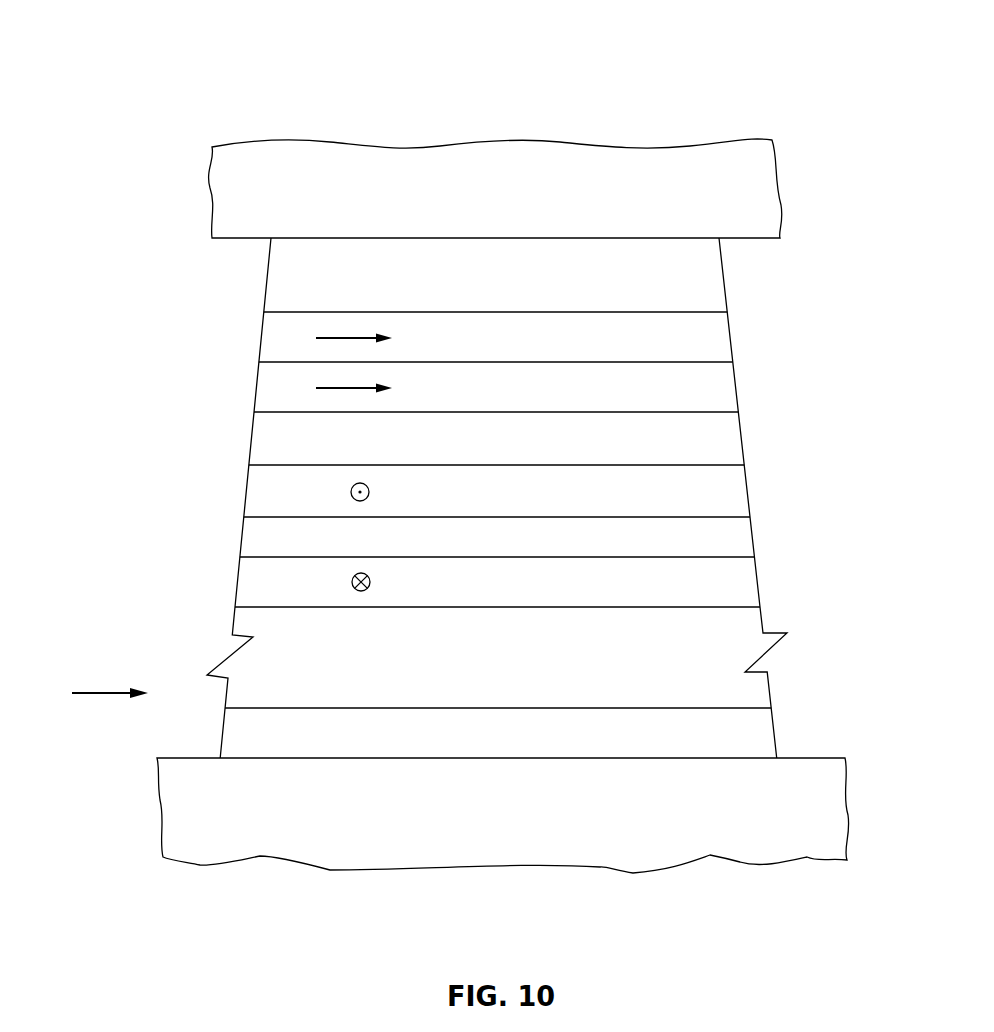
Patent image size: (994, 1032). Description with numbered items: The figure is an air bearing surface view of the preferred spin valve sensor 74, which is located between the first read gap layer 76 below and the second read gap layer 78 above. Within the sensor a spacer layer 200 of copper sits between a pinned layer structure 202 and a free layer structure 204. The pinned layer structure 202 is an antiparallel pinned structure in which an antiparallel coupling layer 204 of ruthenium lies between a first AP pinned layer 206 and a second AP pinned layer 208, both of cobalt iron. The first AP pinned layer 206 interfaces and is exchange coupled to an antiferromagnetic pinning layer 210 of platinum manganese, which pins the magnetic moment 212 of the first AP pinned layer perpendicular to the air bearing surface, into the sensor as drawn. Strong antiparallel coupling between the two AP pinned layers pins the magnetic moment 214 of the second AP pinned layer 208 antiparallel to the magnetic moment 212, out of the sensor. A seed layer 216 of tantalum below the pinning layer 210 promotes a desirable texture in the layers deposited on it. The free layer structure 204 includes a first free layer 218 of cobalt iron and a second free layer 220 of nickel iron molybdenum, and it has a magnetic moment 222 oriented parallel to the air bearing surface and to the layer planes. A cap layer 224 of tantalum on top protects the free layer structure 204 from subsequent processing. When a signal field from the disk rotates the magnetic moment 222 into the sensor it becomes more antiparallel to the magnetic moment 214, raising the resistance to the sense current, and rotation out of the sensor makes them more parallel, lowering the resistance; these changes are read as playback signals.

The spin valve sensor 74 is at (18, 238).
The first read gap layer 76 is at (805, 852).
The second read gap layer 78 is at (777, 168).
The spacer layer 200 is at (744, 441).
The pinned layer structure 202 is at (98, 607).
The free layer structure 204 is at (754, 533).
The first AP pinned layer 206 is at (758, 575).
The second AP pinned layer 208 is at (748, 485).
The antiferromagnetic pinning layer 210 is at (770, 681).
The magnetic moment of the first AP pinned layer 212 is at (352, 582).
The magnetic moment of the second AP pinned layer 214 is at (351, 492).
The seed layer 216 is at (776, 728).
The first free layer 218 is at (739, 395).
The second free layer 220 is at (733, 347).
The magnetic moment of the free layer structure 222 is at (338, 383).
The cap layer 224 is at (727, 283).